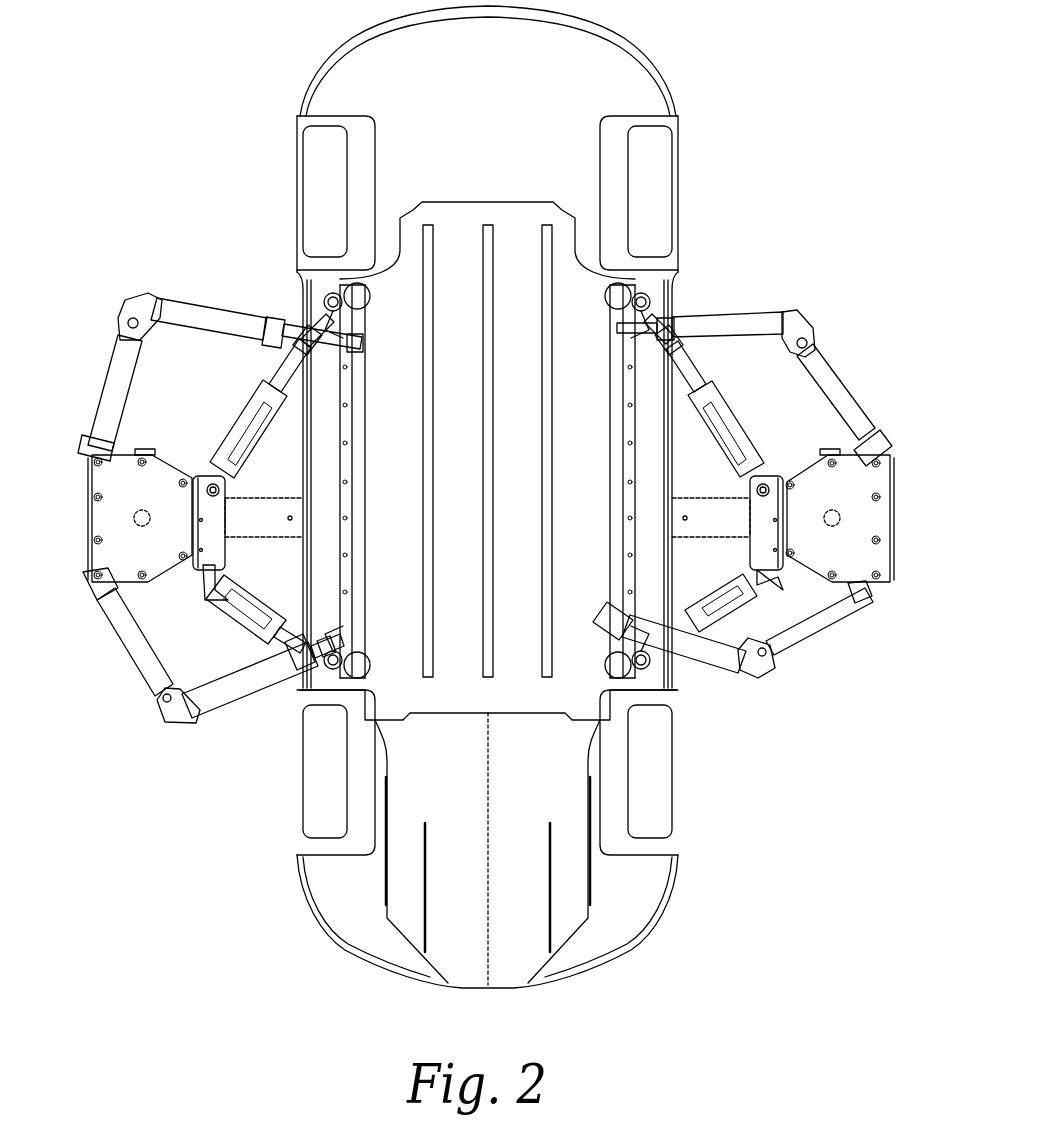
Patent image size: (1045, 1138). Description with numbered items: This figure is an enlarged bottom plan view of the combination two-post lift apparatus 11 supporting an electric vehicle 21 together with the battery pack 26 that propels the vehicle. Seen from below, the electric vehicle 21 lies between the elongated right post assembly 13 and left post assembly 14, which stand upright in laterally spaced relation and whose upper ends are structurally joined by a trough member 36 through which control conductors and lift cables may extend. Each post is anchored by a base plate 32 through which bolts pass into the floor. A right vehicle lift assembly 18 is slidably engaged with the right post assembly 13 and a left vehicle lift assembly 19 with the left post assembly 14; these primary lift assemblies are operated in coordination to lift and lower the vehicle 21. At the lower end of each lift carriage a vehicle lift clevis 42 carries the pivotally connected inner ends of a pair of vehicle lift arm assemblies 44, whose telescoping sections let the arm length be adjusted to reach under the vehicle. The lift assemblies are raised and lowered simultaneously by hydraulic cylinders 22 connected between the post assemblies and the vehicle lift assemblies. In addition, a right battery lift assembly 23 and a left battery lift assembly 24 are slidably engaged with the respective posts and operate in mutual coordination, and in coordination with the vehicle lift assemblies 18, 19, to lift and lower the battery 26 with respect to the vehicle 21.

The two-post lift apparatus 11 is at (188, 219).
The right post assembly 13 is at (170, 459).
The left post assembly 14 is at (803, 452).
The right vehicle lift assembly 18 is at (218, 618).
The left vehicle lift assembly 19 is at (747, 399).
The electric vehicle 21 is at (644, 62).
The hydraulic cylinder 22 is at (133, 518).
The right battery lift assembly 23 is at (89, 374).
The left battery lift assembly 24 is at (842, 346).
The battery pack 26 is at (572, 258).
The base plate 32 is at (117, 573).
The trough member 36 is at (260, 512).
The vehicle lift clevis 42 is at (218, 520).
The vehicle lift arm assembly 44 is at (248, 430).